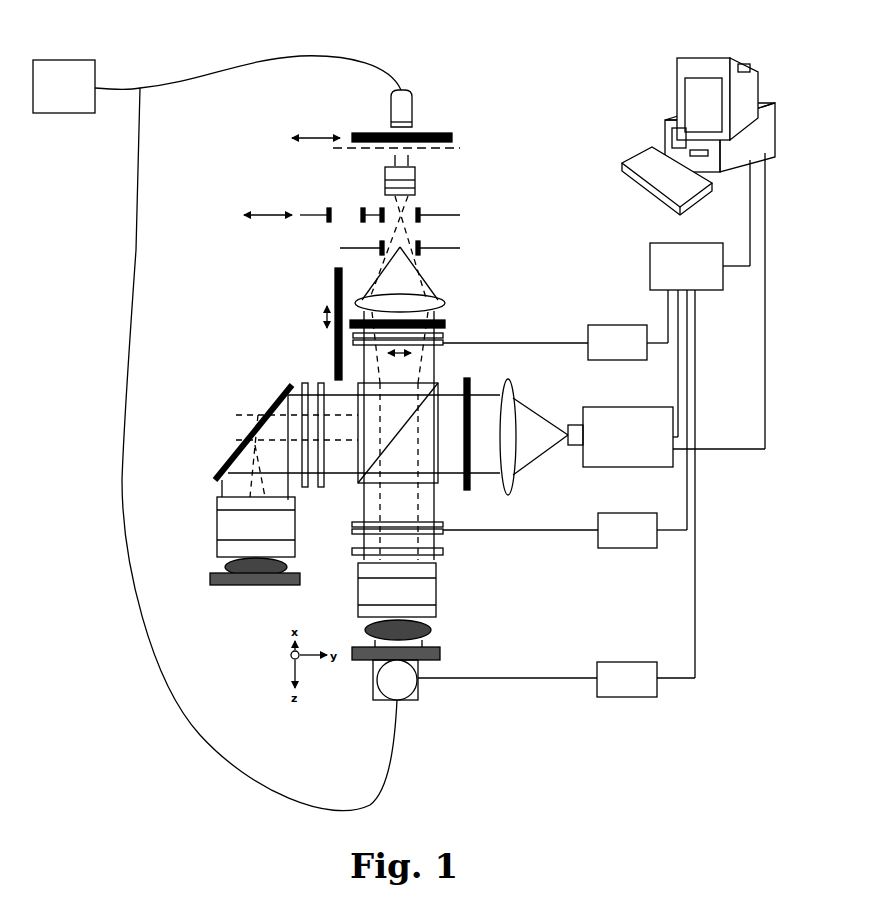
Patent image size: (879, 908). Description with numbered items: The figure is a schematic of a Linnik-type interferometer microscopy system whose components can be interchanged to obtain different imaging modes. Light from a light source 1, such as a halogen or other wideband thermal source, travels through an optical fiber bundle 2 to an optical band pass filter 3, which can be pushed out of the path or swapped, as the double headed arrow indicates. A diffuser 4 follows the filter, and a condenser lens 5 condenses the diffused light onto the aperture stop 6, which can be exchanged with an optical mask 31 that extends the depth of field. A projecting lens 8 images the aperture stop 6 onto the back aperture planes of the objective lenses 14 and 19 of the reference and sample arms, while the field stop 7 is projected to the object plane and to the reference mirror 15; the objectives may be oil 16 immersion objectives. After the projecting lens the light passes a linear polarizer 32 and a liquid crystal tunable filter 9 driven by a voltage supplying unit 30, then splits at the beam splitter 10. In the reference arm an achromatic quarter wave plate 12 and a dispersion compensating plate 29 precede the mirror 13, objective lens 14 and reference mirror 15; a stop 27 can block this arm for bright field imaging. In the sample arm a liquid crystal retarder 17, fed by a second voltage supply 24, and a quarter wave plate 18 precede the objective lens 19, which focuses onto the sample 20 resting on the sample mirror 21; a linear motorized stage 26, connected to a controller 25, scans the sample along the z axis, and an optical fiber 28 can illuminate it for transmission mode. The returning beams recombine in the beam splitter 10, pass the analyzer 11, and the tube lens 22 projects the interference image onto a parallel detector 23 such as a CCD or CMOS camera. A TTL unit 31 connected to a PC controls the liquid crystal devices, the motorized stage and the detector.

The light source 1 is at (64, 86).
The optical fiber bundle 2 is at (253, 80).
The optical band pass filter 3 is at (372, 126).
The diffuser 4 is at (404, 149).
The condenser lens 5 is at (434, 175).
The aperture stop 6 is at (363, 215).
The field stop 7 is at (410, 248).
The projecting lens 8 is at (402, 279).
The liquid crystal tunable filter 9 is at (470, 353).
The beam splitter 10 is at (361, 446).
The analyzer 11 is at (473, 420).
The achromatic quarter wave plate 12 is at (304, 421).
The mirror 13 is at (247, 432).
The objective lens 14 is at (237, 527).
The reference mirror 15 is at (235, 582).
The oil 16 is at (344, 595).
The liquid crystal retarder 17 is at (475, 520).
The achromatic quarter wave plate 18 is at (412, 557).
The objective lens 19 is at (415, 590).
The sample 20 is at (379, 639).
The sample mirror 21 is at (415, 657).
The tube lens 22 is at (534, 429).
The parallel detector 23 is at (666, 437).
The second voltage supply 24 is at (642, 530).
The controller 25 is at (646, 679).
The linear motorized stage 26 is at (485, 680).
The stop 27 is at (320, 324).
The optical fiber 28 is at (259, 449).
The dispersion compensating plate 29 is at (323, 448).
The voltage supplying unit 30 is at (628, 342).
The TTL unit / optical mask 31 is at (540, 433).
The linear polarizer 32 is at (412, 326).